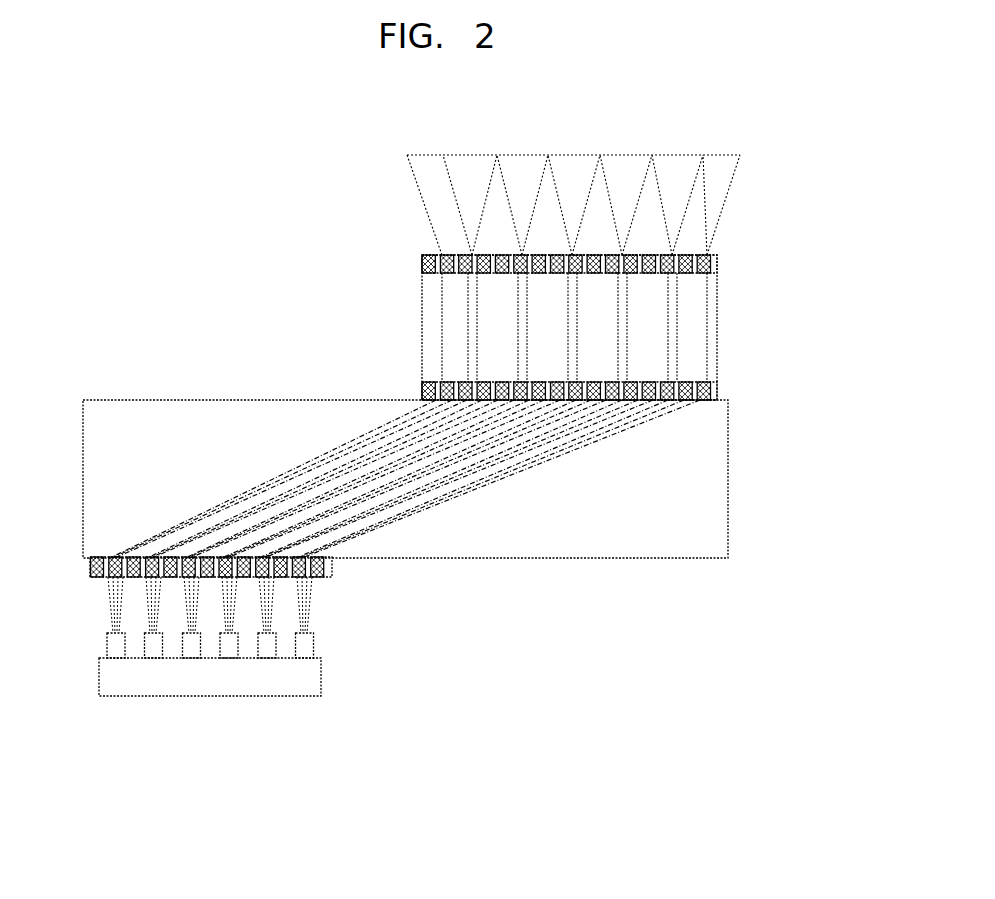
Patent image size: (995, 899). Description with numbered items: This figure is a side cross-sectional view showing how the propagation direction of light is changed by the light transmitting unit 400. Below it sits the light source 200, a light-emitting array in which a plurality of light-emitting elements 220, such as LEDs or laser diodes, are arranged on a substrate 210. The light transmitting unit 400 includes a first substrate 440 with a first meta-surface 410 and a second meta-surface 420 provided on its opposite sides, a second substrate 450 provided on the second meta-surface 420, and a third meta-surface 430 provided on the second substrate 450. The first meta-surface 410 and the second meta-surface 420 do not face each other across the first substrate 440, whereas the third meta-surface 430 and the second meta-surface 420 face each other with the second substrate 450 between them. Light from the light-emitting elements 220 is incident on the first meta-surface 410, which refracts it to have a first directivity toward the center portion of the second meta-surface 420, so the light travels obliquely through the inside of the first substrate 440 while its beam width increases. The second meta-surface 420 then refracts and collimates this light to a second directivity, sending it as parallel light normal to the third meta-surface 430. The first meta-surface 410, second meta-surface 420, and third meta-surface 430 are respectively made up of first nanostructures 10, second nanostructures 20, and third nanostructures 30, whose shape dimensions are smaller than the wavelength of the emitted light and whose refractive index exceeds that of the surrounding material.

The first nanostructure 10 is at (90, 565).
The second nanostructure 20 is at (717, 392).
The third nanostructure 30 is at (422, 258).
The light source 200 is at (245, 703).
The substrate 210 is at (321, 680).
The light-emitting elements 220 is at (314, 645).
The light transmitting unit 400 is at (474, 420).
The first meta-surface 410 is at (332, 568).
The second meta-surface 420 is at (422, 390).
The third meta-surface 430 is at (717, 262).
The first substrate 440 is at (722, 495).
The second substrate 450 is at (428, 315).